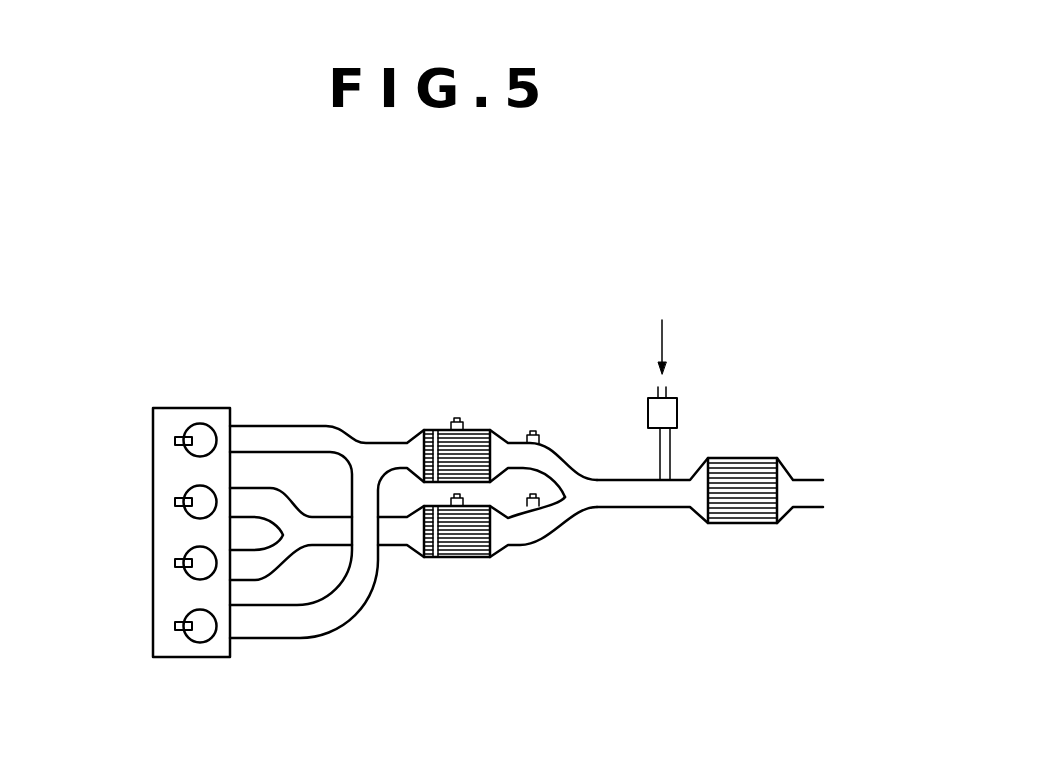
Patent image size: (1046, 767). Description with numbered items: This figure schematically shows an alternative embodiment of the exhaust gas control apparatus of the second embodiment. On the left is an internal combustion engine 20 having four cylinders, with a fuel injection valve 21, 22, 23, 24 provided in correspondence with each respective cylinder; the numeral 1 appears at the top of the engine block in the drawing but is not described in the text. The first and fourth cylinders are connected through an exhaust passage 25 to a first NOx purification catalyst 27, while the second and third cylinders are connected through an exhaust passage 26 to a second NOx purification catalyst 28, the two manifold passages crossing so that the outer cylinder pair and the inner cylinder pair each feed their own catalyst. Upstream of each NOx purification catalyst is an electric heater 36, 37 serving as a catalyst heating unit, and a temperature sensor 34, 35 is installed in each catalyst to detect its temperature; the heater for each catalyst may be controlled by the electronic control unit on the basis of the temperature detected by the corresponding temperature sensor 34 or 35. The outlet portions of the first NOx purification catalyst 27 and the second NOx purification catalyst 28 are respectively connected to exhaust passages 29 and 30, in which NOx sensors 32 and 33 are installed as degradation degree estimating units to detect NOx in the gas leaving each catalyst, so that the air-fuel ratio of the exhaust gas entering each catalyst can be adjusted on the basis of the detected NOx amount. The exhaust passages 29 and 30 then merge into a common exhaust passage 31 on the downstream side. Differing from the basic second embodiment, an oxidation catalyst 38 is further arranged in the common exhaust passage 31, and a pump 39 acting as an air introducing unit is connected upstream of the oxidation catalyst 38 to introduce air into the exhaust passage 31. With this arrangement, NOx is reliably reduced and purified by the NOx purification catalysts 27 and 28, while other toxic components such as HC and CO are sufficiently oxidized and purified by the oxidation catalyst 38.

The internal combustion engine 1 is at (181, 410).
The internal combustion engine 20 is at (168, 533).
The fuel injection valve 21 is at (175, 438).
The fuel injection valve 22 is at (175, 501).
The fuel injection valve 23 is at (183, 578).
The fuel injection valve 24 is at (182, 643).
The exhaust passage 25 is at (383, 455).
The exhaust passage 26 is at (331, 533).
The first NOx purification catalyst 27 is at (477, 440).
The second NOx purification catalyst 28 is at (477, 560).
The exhaust passage 29 is at (542, 455).
The exhaust passage 30 is at (540, 560).
The common exhaust passage 31 is at (635, 495).
The NOx sensor 32 is at (533, 431).
The NOx sensor 33 is at (541, 501).
The temperature sensor 34 is at (457, 418).
The temperature sensor 35 is at (453, 500).
The electric heater 36 is at (435, 435).
The electric heater 37 is at (430, 560).
The oxidation catalyst 38 is at (737, 470).
The pump 39 is at (670, 413).